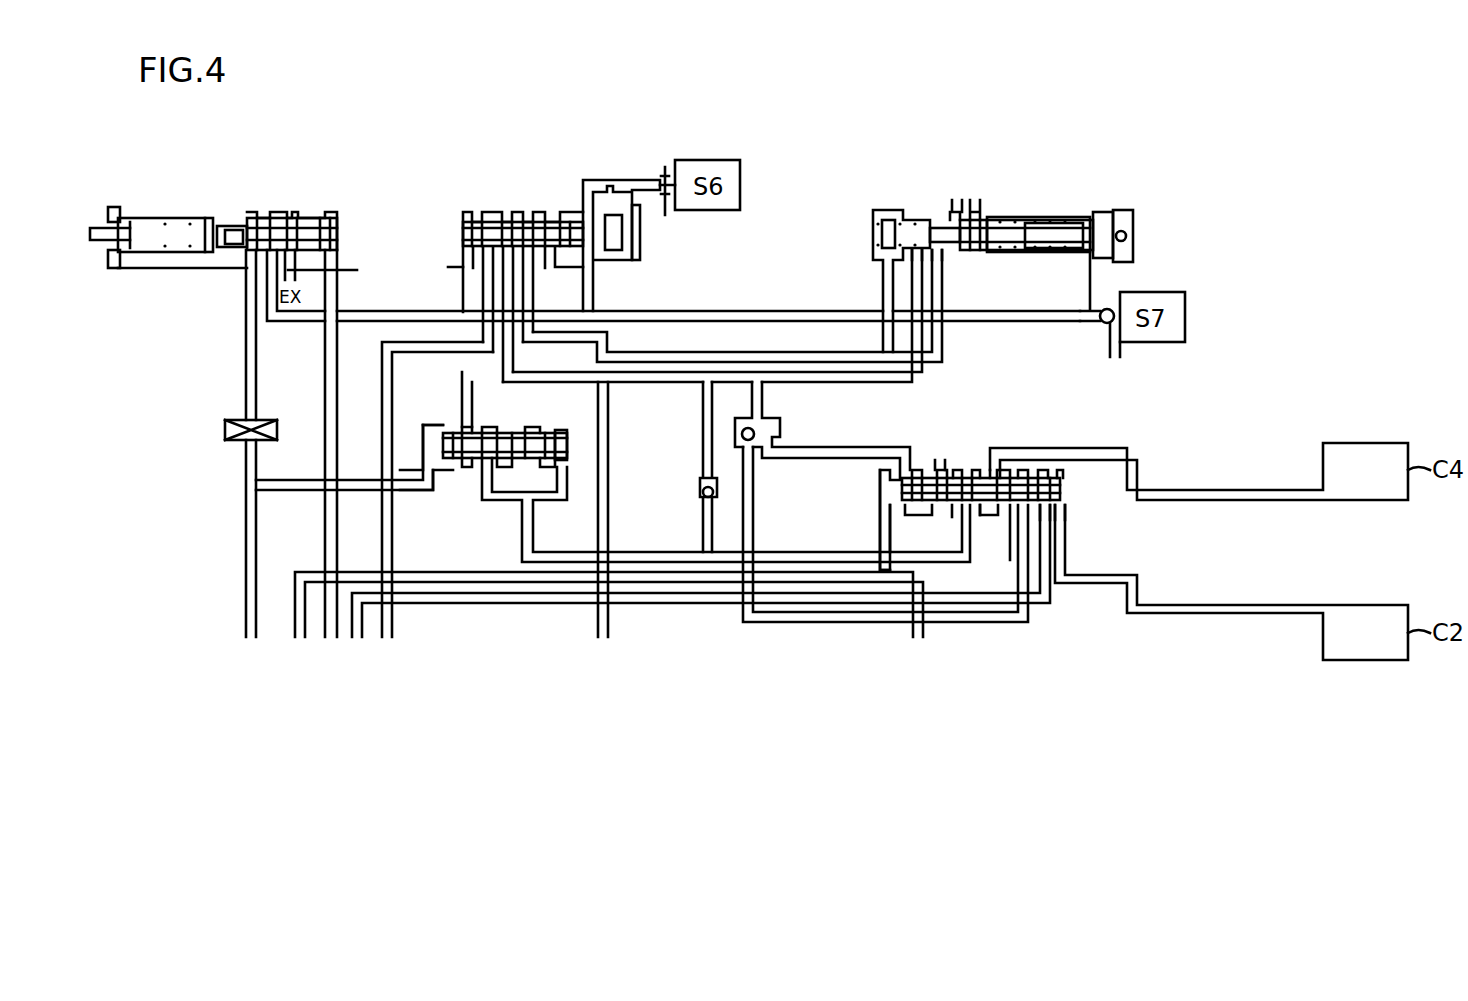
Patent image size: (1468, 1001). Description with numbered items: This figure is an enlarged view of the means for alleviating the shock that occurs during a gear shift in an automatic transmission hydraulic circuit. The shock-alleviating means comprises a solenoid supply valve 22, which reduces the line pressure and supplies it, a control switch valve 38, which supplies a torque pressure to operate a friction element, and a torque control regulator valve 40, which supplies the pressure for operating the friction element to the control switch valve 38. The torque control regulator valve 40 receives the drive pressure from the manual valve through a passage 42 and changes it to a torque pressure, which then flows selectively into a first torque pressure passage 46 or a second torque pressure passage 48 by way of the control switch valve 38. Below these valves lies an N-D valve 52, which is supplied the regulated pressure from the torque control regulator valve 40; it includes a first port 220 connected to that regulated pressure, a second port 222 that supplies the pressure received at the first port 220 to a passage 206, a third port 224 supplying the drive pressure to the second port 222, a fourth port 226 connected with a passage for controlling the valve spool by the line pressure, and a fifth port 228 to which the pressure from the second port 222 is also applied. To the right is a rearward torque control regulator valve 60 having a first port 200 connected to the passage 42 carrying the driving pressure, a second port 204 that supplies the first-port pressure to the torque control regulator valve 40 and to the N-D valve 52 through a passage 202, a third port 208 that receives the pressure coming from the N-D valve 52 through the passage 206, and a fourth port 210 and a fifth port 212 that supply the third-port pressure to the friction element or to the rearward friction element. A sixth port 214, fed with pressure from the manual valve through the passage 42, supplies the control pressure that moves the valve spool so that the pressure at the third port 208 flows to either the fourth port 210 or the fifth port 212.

The solenoid supply valve 22 is at (270, 196).
The control switch valve 38 is at (652, 239).
The torque control regulator valve 40 is at (1147, 239).
The passage 42 is at (358, 575).
The first torque pressure passage 46 is at (382, 404).
The second torque pressure passage 48 is at (608, 426).
The N-D valve 52 is at (685, 468).
The rearward torque control regulator valve 60 is at (963, 542).
The first port 200 is at (1050, 510).
The passage 202 is at (822, 622).
The second port 204 is at (1058, 515).
The passage 206 is at (665, 552).
The third port 208 is at (983, 553).
The fourth port 210 is at (953, 553).
The fifth port 212 is at (992, 468).
The sixth port 214 is at (885, 507).
The first port 220 is at (515, 430).
The second port 222 is at (487, 468).
The third port 224 is at (465, 420).
The fourth port 226 is at (433, 485).
The fifth port 228 is at (563, 485).